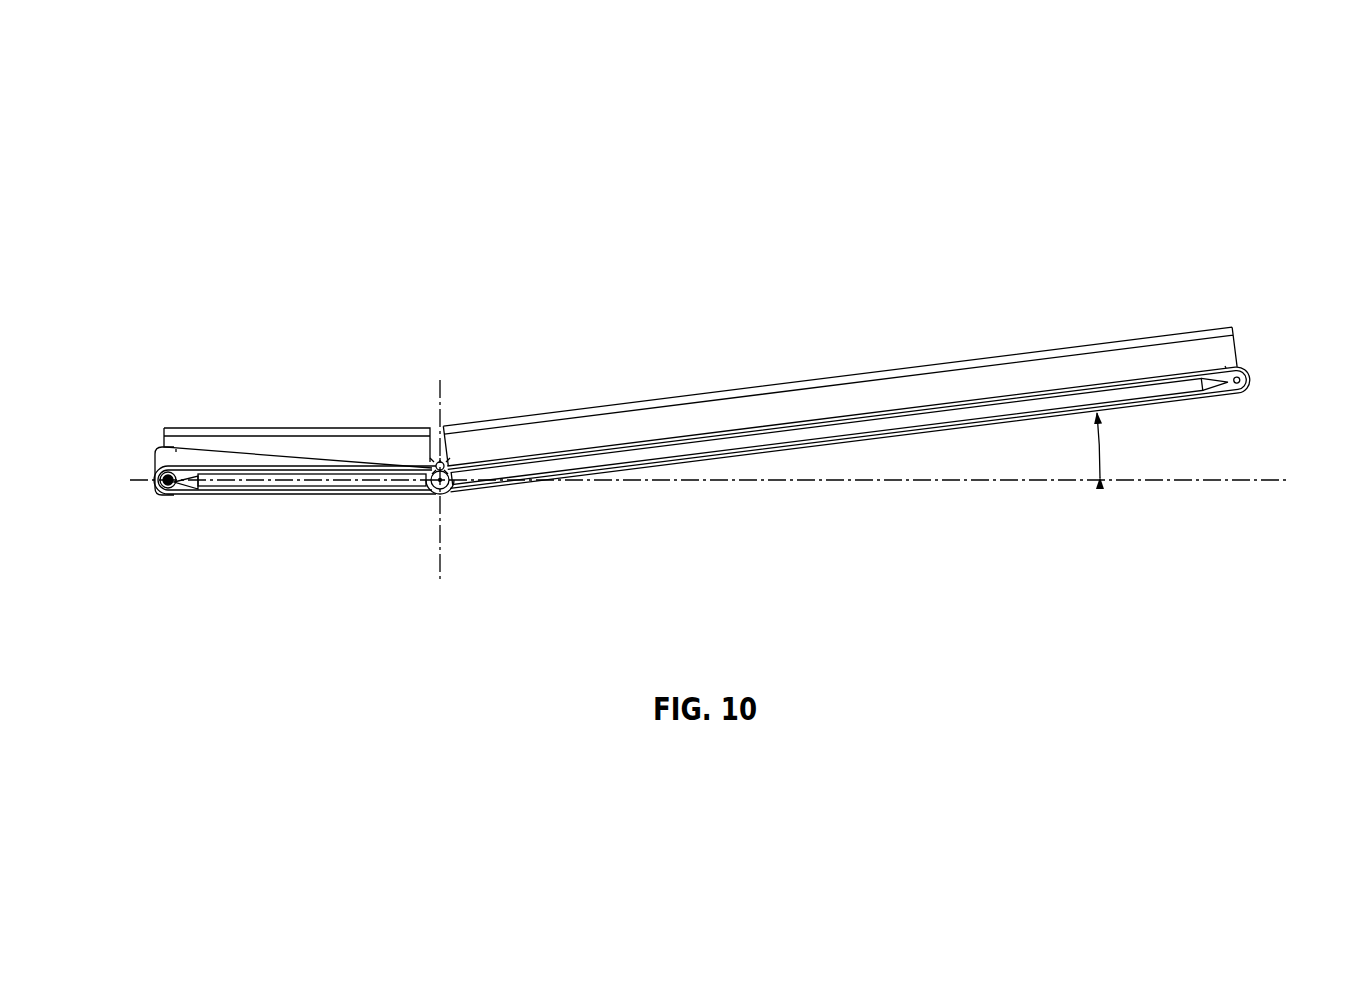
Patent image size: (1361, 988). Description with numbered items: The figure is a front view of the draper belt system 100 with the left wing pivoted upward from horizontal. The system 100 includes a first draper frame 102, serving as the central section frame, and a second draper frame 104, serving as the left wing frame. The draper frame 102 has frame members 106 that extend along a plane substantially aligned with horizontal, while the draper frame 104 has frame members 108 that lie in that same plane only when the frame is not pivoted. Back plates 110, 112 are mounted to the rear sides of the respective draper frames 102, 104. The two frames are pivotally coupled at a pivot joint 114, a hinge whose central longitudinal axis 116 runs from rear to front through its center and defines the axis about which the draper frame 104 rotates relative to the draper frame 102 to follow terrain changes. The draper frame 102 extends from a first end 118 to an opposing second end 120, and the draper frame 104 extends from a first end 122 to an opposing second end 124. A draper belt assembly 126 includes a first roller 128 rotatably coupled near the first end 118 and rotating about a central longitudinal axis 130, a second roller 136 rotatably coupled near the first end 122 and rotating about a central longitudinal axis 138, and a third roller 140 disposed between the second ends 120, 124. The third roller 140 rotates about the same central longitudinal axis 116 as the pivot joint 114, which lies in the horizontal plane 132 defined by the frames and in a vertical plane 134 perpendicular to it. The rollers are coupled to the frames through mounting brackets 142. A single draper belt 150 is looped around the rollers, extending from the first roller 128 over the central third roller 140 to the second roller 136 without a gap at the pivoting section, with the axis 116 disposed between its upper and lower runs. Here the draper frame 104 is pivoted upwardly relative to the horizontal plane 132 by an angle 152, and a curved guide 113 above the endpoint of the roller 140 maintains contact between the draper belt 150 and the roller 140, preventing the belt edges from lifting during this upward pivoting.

The draper belt system 100 is at (1252, 170).
The first draper frame 102 is at (270, 380).
The second draper frame 104 is at (963, 322).
The frame members 106 is at (272, 494).
The frame members 108 is at (792, 435).
The back plate 110 is at (195, 428).
The back plate 112 is at (658, 403).
The guide 113 is at (452, 462).
The pivot joint 114 is at (453, 463).
The central longitudinal axis 116 is at (432, 497).
The first end 118 is at (148, 453).
The second end 120 is at (417, 462).
The first end 122 is at (1255, 353).
The second end 124 is at (478, 490).
The draper belt assembly 126 is at (1062, 335).
The first roller 128 is at (186, 490).
The central longitudinal axis 130 is at (165, 493).
The horizontal plane 132 is at (1222, 482).
The vertical plane 134 is at (441, 460).
The second roller 136 is at (1245, 378).
The central longitudinal axis 138 is at (1228, 385).
The third roller 140 is at (446, 493).
The mounting brackets 142 is at (176, 470).
The draper belt 150 is at (752, 425).
The angle 152 is at (1099, 445).